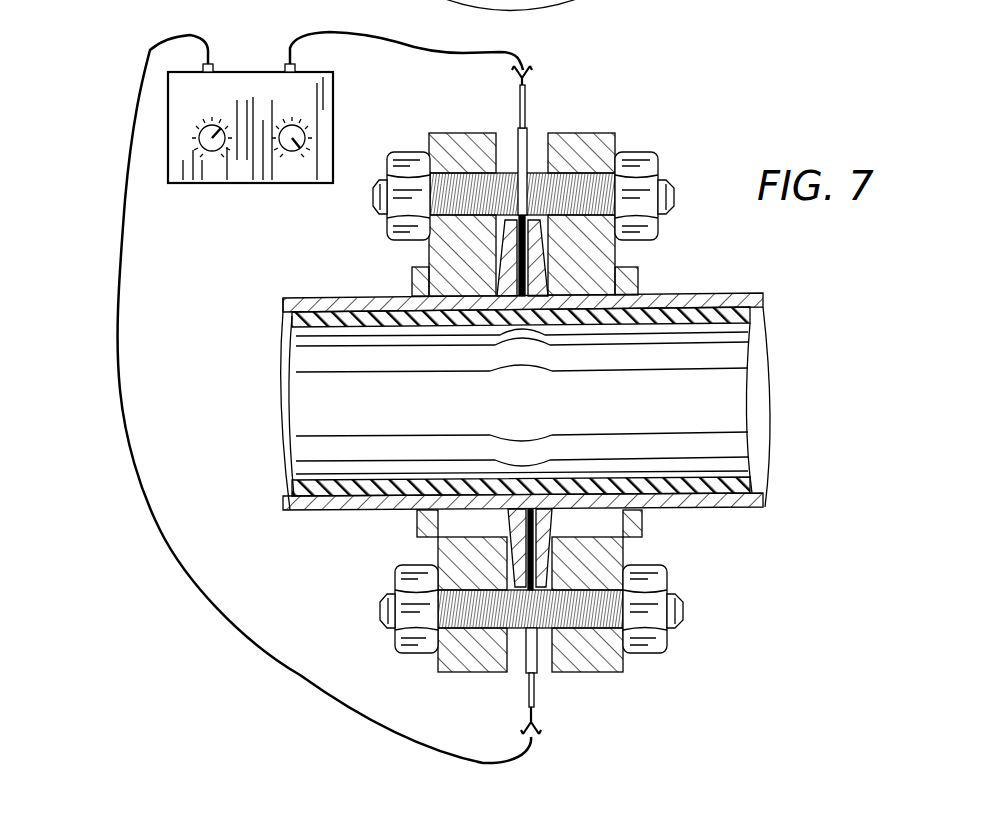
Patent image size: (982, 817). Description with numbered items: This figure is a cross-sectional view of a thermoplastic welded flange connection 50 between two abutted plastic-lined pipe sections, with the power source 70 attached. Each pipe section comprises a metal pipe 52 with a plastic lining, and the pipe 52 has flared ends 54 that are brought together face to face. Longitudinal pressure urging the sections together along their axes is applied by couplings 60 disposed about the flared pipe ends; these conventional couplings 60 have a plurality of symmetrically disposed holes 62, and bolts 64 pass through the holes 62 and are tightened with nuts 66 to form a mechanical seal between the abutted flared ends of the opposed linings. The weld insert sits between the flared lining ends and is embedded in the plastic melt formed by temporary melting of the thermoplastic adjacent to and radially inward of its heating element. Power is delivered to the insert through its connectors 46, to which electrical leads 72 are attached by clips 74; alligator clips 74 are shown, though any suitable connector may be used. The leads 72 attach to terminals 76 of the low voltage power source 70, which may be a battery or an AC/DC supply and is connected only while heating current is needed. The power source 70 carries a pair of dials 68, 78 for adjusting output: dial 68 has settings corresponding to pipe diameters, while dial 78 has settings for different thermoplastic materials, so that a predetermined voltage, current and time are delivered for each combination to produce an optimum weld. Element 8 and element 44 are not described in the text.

The pipe flange base 8 is at (630, 263).
The heating element pin 44 is at (530, 130).
The connectors 46 is at (527, 102).
The welded connection 50 is at (688, 522).
The metal pipe 52 is at (707, 292).
The flared ends 54 is at (752, 350).
The couplings 60 is at (437, 135).
The holes 62 is at (537, 0).
The bolts 64 is at (433, 237).
The nuts 66 is at (658, 154).
The dial 68 is at (212, 152).
The power source 70 is at (301, 184).
The electrical leads 72 is at (117, 390).
The clips 74 is at (532, 72).
The terminals 76 is at (215, 63).
The dial 78 is at (293, 152).